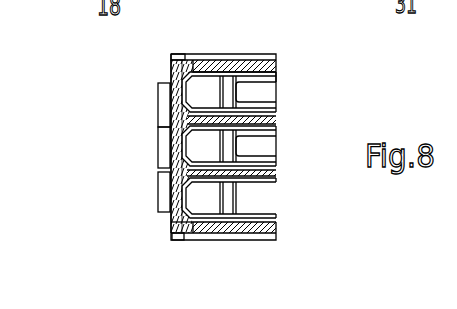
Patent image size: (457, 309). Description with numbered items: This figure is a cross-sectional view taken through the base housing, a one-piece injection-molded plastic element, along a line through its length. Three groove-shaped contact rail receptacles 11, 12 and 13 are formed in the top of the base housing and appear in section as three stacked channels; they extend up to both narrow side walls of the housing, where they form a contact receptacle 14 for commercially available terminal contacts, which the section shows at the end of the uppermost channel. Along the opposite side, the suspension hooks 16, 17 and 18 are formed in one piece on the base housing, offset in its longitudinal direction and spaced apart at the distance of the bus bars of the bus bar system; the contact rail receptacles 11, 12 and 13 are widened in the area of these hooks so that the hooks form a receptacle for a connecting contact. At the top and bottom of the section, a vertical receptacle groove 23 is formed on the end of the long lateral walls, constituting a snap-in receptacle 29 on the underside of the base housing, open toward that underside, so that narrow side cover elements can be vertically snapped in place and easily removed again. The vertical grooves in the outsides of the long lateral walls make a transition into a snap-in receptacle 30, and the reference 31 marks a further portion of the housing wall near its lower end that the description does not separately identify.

The contact rail receptacle 11 is at (267, 92).
The contact rail receptacle 12 is at (267, 143).
The contact rail receptacle 13 is at (272, 198).
The contact receptacle 14 is at (205, 90).
The suspension hook 16 is at (158, 112).
The suspension hook 17 is at (158, 152).
The suspension hook 18 is at (160, 188).
The vertical receptacle groove 23 is at (244, 56).
The snap-in receptacle 29 is at (178, 52).
The snap-in receptacle 30 is at (171, 68).
The bottom web 31 is at (172, 232).